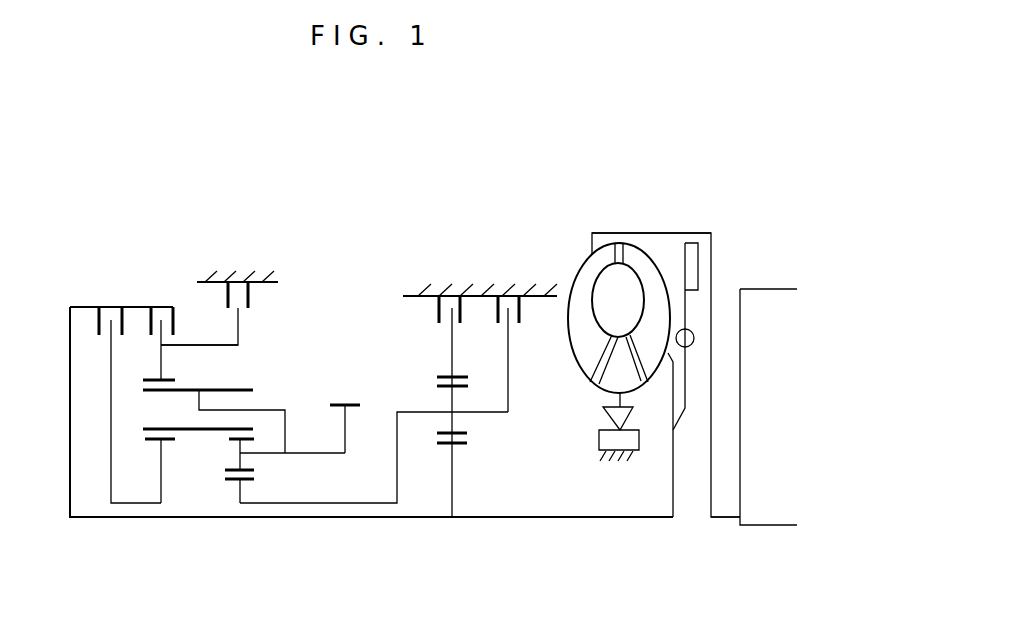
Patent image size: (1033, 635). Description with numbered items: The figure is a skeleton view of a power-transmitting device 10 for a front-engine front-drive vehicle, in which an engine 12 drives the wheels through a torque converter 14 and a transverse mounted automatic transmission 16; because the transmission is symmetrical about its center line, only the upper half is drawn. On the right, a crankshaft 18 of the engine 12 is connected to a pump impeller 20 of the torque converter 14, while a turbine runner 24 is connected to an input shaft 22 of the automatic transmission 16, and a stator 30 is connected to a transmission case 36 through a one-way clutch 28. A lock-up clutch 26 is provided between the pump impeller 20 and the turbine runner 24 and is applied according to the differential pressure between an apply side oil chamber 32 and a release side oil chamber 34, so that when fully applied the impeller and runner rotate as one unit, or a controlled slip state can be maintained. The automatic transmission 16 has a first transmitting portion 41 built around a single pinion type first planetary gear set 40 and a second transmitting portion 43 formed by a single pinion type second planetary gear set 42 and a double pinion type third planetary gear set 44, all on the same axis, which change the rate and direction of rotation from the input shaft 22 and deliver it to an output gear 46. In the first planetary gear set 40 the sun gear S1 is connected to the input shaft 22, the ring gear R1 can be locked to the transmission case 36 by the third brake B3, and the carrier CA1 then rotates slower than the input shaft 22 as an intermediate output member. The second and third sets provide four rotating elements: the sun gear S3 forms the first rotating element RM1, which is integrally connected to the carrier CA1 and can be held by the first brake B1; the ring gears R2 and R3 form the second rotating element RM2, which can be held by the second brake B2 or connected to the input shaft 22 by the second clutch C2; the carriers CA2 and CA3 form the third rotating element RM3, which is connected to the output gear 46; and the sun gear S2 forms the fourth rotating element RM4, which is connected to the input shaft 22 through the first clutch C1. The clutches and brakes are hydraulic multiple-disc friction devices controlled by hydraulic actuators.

The power-transmitting device 10 is at (568, 138).
The engine 12 is at (770, 517).
The torque converter 14 is at (670, 329).
The automatic transmission 16 is at (442, 223).
The crankshaft 18 is at (722, 519).
The pump impeller 20 is at (590, 273).
The input shaft 22 is at (535, 518).
The turbine runner 24 is at (647, 267).
The lock-up clutch 26 is at (692, 262).
The one-way clutch 28 is at (633, 418).
The stator 30 is at (608, 381).
The apply side oil chamber 32 is at (675, 242).
The release side oil chamber 34 is at (700, 300).
The transmission case 36 is at (237, 270).
The first planetary gear set 40 is at (446, 532).
The first transmitting portion 41 is at (380, 300).
The second planetary gear set 42 is at (163, 513).
The second transmitting portion 43 is at (302, 265).
The third planetary gear set 44 is at (243, 513).
The output gear 46 is at (350, 403).
The first clutch C1 is at (127, 389).
The second clutch C2 is at (159, 328).
The first brake B1 is at (529, 313).
The second brake B2 is at (226, 313).
The third brake B3 is at (430, 313).
The ring gear R1 is at (458, 376).
The ring gear R2 is at (212, 370).
The ring gear R3 is at (166, 378).
The sun gear S1 is at (462, 446).
The sun gear S2 is at (167, 440).
The sun gear S3 is at (247, 482).
The carrier CA1 is at (508, 378).
The carrier CA2 is at (280, 410).
The carrier CA3 is at (287, 379).
The first rotating element RM1 is at (300, 504).
The second rotating element RM2 is at (197, 340).
The third rotating element RM3 is at (313, 455).
The fourth rotating element RM4 is at (187, 478).